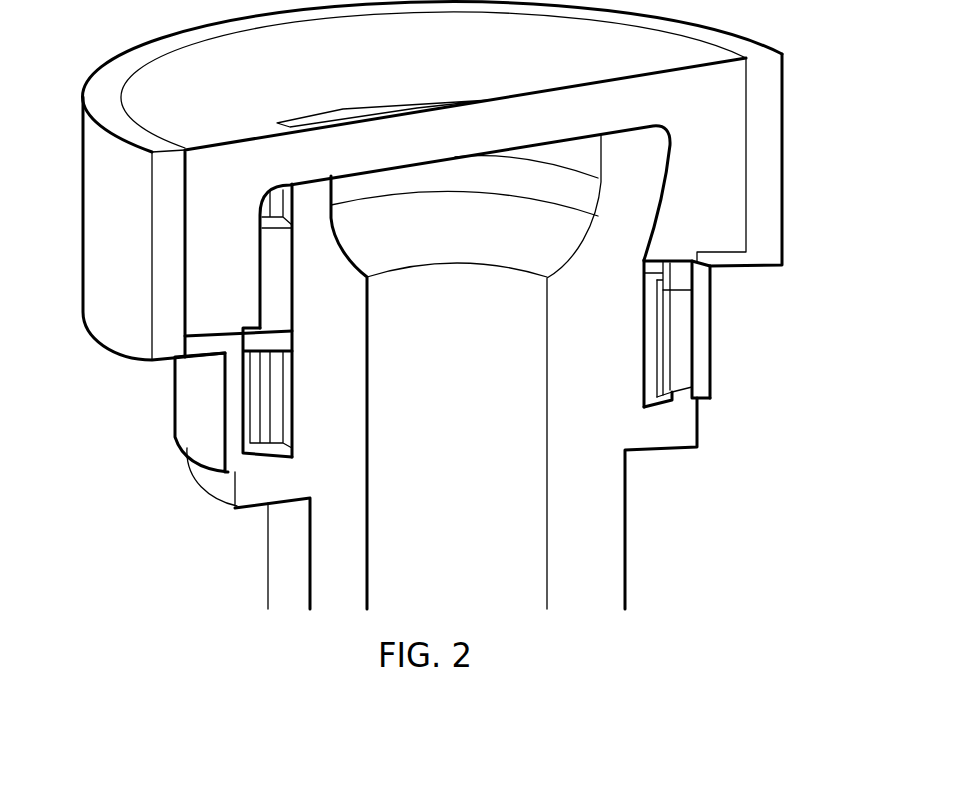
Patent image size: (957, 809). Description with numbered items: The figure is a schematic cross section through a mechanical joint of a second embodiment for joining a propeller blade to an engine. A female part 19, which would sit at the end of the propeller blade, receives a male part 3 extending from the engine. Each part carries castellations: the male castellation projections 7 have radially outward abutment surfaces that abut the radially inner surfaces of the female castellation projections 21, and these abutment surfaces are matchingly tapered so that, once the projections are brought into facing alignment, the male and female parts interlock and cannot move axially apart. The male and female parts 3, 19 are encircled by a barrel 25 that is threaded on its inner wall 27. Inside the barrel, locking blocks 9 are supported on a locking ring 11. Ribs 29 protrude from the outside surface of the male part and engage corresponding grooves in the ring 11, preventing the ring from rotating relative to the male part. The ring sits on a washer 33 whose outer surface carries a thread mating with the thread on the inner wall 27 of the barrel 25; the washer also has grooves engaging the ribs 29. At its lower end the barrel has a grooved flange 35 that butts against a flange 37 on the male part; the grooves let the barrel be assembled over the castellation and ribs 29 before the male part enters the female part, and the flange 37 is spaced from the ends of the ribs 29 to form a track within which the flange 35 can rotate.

The male part 3 is at (312, 198).
The male castellation projection 7 is at (650, 187).
The locking block 9 is at (278, 275).
The locking ring 11 is at (683, 271).
The female part 19 is at (212, 262).
The female castellation projection 21 is at (710, 225).
The barrel 25 is at (98, 160).
The inner wall 27 is at (683, 338).
The rib 29 is at (272, 400).
The washer 33 is at (680, 283).
The grooved flange 35 is at (262, 462).
The flange 37 is at (672, 422).